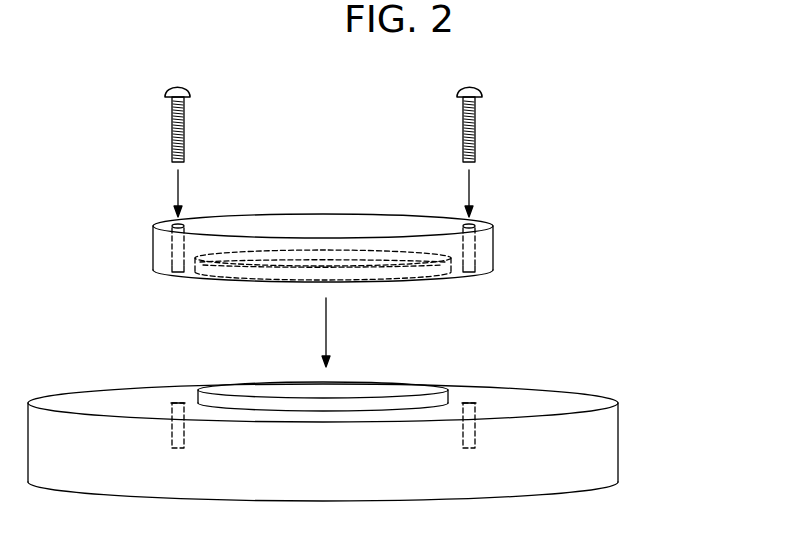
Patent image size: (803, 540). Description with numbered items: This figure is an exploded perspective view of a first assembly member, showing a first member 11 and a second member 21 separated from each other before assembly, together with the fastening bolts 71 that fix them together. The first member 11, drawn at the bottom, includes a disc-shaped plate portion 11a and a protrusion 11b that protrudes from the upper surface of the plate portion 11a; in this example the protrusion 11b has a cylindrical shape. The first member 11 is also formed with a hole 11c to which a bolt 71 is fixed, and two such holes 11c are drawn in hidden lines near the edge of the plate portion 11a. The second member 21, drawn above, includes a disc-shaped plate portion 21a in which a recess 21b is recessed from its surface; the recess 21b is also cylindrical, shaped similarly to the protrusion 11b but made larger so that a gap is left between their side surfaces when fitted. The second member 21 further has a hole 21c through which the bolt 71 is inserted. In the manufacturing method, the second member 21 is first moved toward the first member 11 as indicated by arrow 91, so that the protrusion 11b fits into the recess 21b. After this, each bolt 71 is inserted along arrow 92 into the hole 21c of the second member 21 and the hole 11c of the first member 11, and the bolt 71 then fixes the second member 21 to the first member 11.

The first member 11 is at (401, 433).
The plate portion 11a is at (618, 453).
The protrusion 11b is at (448, 390).
The hole 11c is at (476, 433).
The second member 21 is at (408, 238).
The plate portion 21a is at (493, 237).
The recess 21b is at (495, 251).
The hole 21c is at (495, 256).
The bolt 71 is at (185, 127).
The arrow 91 is at (326, 323).
The arrow 92 is at (178, 185).